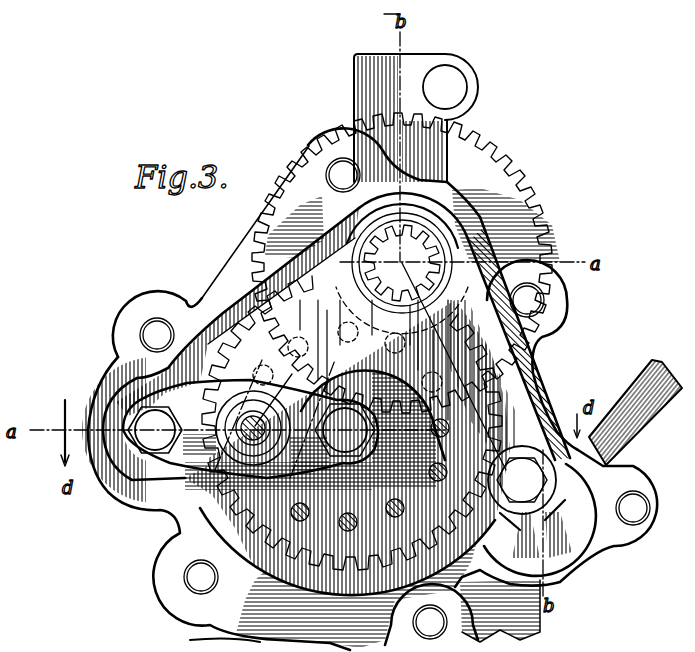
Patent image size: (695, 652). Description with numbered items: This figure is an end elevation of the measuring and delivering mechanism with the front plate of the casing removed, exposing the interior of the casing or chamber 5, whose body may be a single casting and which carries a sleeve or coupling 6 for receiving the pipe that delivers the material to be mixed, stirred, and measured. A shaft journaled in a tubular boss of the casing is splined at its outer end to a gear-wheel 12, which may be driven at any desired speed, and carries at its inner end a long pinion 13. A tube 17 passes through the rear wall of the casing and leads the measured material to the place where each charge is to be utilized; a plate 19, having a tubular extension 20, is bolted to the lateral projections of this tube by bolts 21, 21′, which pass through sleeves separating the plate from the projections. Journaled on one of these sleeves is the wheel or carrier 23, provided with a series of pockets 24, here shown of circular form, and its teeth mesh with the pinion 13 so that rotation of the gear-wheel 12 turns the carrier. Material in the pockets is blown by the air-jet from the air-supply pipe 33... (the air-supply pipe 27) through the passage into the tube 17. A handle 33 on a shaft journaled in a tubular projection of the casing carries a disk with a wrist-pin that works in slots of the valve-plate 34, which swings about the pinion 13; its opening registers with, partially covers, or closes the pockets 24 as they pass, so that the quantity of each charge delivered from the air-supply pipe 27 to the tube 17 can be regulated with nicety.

The casing or chamber 5 is at (372, 389).
The sleeve or coupling 6 is at (355, 92).
The gear-wheel 12 is at (522, 180).
The long pinion 13 is at (402, 263).
The tube 17 is at (215, 632).
The plate 19 is at (250, 429).
The tubular extension 20 is at (276, 412).
The bolt 21 is at (155, 430).
The bolt 21′ is at (345, 430).
The wheel or carrier 23 is at (351, 435).
The pockets 24 is at (274, 524).
The air-supply pipe 27 is at (282, 394).
The handle 33 is at (634, 432).
The valve-plate 34 is at (314, 417).